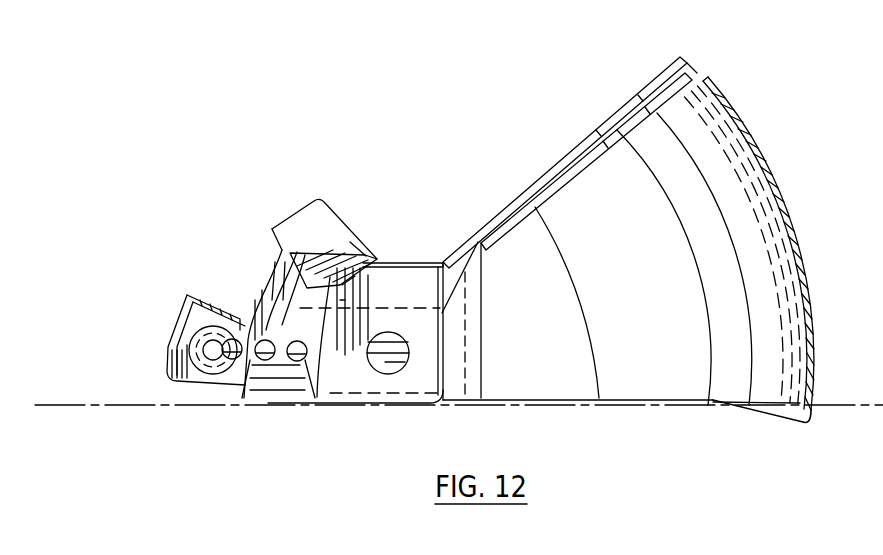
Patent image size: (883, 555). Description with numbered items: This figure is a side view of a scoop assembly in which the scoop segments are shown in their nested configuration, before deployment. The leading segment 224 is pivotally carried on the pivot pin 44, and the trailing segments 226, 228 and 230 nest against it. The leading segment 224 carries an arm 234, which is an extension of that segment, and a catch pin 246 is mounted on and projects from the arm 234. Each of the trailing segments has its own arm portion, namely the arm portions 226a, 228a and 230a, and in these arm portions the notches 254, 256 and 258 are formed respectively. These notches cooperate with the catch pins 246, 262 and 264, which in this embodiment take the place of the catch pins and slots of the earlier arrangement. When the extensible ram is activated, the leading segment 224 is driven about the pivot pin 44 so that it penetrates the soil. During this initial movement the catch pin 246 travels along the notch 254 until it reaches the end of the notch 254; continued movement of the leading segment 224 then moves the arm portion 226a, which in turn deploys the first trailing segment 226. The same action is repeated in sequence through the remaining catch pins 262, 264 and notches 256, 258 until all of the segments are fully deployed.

The leading segment 224 is at (807, 275).
The first trailing segment 226 is at (668, 66).
The trailing segment 228 is at (697, 72).
The trailing segment 230 is at (647, 110).
The arm portion 226a is at (320, 218).
The arm portion 228a is at (340, 240).
The arm portion 230a is at (368, 268).
The notch 254 is at (277, 240).
The notch 256 is at (352, 240).
The notch 258 is at (327, 301).
The arm 234 is at (167, 367).
The catch pin 246 is at (231, 392).
The catch pin 262 is at (276, 392).
The catch pin 264 is at (322, 392).
The pivot pin 44 is at (400, 372).